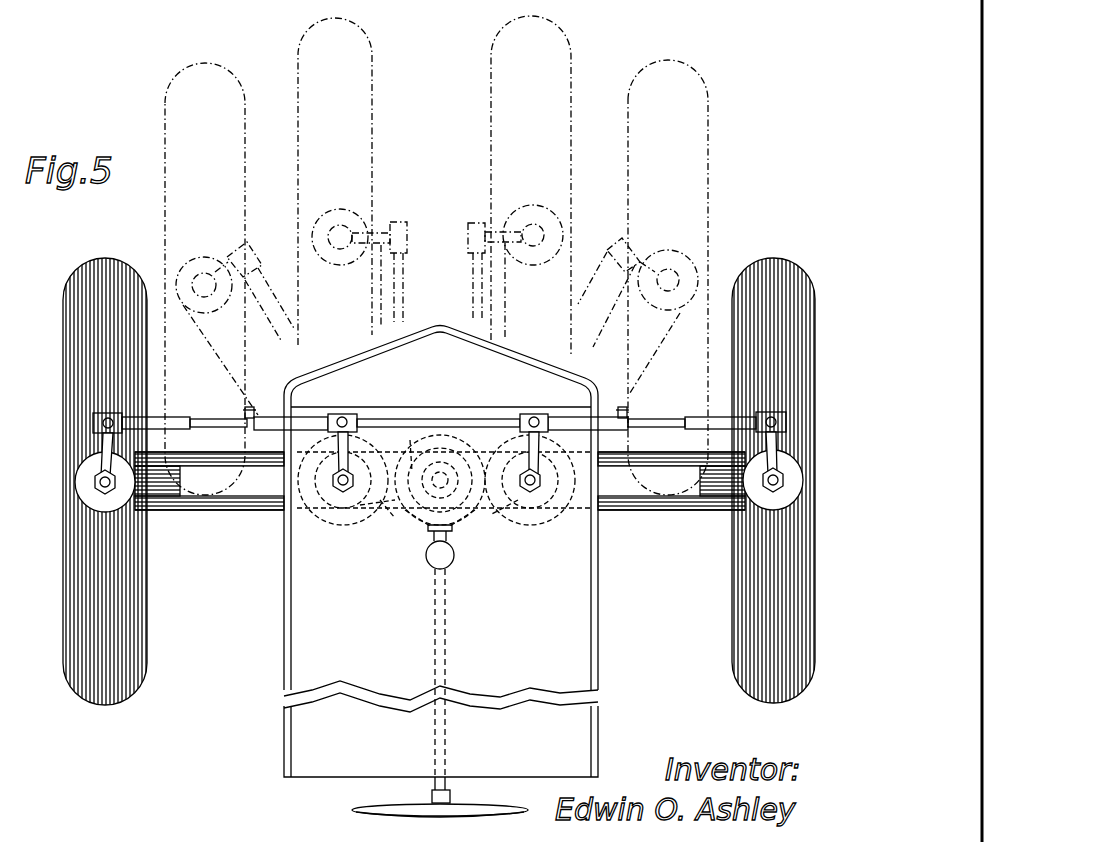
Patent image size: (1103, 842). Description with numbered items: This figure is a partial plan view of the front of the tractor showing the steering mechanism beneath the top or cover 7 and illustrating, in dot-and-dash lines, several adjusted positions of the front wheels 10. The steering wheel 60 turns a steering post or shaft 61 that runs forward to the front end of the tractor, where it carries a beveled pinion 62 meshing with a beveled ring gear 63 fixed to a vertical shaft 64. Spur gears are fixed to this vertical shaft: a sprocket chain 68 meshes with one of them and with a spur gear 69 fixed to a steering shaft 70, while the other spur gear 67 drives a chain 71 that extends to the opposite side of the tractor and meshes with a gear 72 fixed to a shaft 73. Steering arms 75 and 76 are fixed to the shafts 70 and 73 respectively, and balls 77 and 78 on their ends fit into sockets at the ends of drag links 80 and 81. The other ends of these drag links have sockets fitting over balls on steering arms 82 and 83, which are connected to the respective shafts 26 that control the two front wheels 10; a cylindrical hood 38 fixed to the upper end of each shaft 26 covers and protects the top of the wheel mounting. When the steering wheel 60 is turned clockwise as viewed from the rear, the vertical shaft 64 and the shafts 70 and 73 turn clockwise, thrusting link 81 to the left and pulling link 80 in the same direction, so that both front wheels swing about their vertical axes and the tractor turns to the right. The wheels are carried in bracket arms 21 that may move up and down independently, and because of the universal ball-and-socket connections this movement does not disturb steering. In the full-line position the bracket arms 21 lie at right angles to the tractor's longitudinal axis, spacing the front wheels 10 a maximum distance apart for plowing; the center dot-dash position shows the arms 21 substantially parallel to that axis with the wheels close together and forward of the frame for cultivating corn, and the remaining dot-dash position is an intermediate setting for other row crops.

The top or cover 7 is at (598, 624).
The front wheel 10 is at (240, 72).
The bracket arm 21 is at (235, 512).
The shaft 26 is at (98, 482).
The cylindrical hood 38 is at (82, 505).
The steering wheel 60 is at (368, 808).
The steering post or shaft 61 is at (436, 749).
The beveled pinion 62 is at (428, 532).
The beveled ring gear 63 is at (405, 510).
The vertical shaft 64 is at (442, 472).
The spur gear 67 is at (410, 442).
The sprocket chain 68 is at (470, 512).
The spur gear 69 is at (518, 515).
The steering shaft 70 is at (536, 500).
The chain 71 is at (383, 520).
The gear 72 is at (368, 505).
The shaft 73 is at (340, 492).
The steering arm 75 is at (520, 428).
The steering arm 76 is at (357, 428).
The ball 77 is at (532, 413).
The ball 78 is at (344, 413).
The drag link 80 is at (471, 301).
The drag link 81 is at (172, 420).
The steering arm 82 is at (492, 232).
The steering arm 83 is at (240, 240).